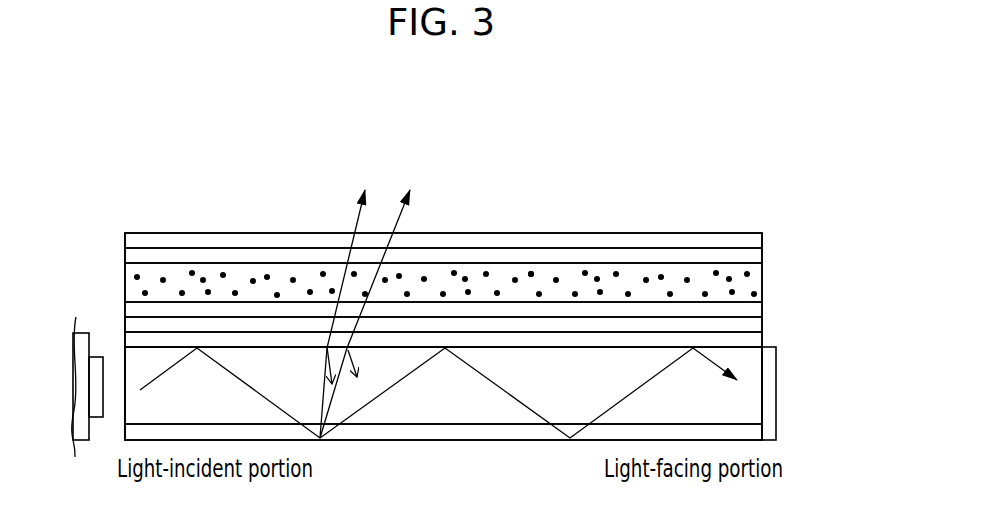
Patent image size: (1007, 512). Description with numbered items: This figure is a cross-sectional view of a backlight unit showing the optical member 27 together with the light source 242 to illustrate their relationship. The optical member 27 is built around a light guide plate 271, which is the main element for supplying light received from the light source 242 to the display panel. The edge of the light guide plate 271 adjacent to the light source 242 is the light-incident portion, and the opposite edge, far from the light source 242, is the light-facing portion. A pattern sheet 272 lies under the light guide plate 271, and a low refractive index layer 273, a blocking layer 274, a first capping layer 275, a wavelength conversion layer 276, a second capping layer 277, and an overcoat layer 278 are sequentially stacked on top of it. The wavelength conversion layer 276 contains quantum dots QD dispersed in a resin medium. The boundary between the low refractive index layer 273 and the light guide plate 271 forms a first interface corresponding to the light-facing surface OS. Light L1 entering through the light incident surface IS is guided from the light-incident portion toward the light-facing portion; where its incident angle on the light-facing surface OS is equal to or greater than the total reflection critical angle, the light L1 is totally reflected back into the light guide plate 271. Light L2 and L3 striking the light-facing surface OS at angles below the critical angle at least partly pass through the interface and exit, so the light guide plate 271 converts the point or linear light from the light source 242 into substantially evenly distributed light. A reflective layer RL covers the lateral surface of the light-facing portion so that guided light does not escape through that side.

The optical member 27 is at (466, 151).
The light source 242 is at (93, 363).
The light incident surface IS is at (125, 413).
The light guide plate 271 is at (750, 370).
The pattern sheet 272 is at (750, 435).
The low refractive index layer 273 is at (750, 340).
The blocking layer 274 is at (750, 323).
The first capping layer 275 is at (752, 307).
The wavelength conversion layer 276 is at (762, 278).
The second capping layer 277 is at (752, 255).
The overcoat layer 278 is at (750, 240).
The reflective layer RL is at (768, 403).
The light-facing surface OS is at (608, 347).
The quantum dots QD is at (530, 275).
The light L1 is at (438, 393).
The light L2 is at (331, 314).
The light L3 is at (365, 314).